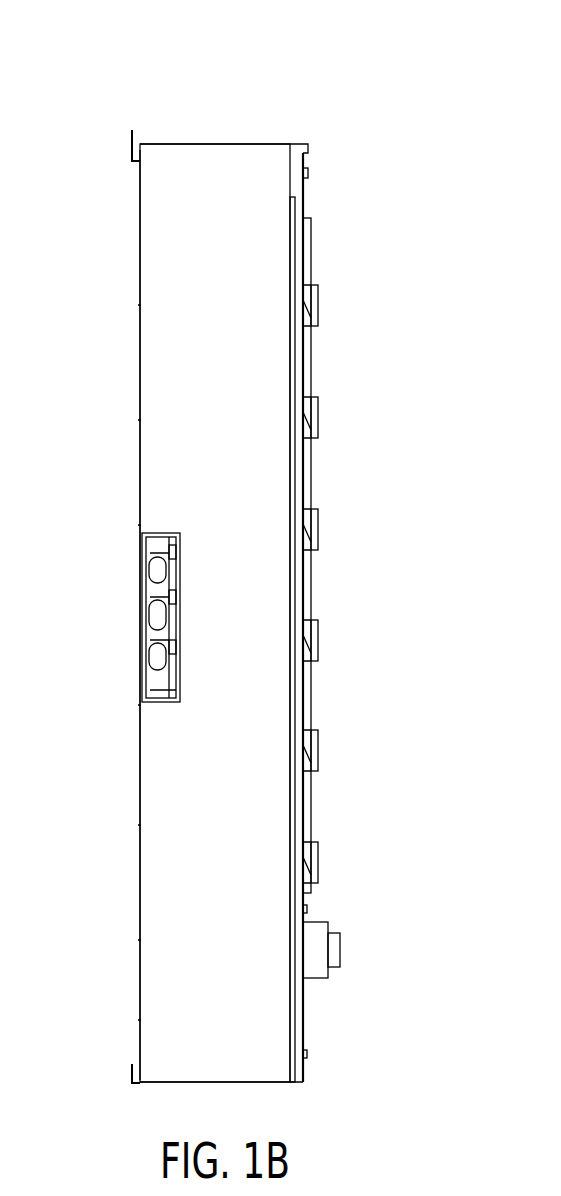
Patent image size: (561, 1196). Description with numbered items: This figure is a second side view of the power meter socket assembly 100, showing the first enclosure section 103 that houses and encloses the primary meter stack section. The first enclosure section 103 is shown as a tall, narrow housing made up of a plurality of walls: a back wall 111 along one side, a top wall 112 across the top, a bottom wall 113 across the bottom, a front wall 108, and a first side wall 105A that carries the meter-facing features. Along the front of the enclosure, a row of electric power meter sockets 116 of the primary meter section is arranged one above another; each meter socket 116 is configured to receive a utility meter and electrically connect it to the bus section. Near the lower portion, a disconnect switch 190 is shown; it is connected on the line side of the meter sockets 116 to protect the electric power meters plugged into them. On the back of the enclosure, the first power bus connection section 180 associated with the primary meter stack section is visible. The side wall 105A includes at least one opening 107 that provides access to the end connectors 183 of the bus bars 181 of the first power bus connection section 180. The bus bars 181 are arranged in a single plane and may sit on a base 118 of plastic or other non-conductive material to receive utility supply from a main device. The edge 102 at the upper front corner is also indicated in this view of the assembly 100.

The power meter socket assembly 100 is at (243, 90).
The front panel 102 is at (283, 148).
The first enclosure section 103 is at (160, 334).
The first side wall 105A is at (263, 1022).
The opening 107 is at (145, 695).
The front wall 108 is at (308, 185).
The back wall 111 is at (140, 388).
The top wall 112 is at (178, 140).
The bottom wall 113 is at (265, 1078).
The electric power meter socket 116 is at (305, 265).
The base 118 is at (145, 635).
The first power bus connection section 180 is at (125, 590).
The bus bars 181 is at (145, 672).
The end connectors 183 is at (145, 552).
The disconnect switch 190 is at (312, 950).